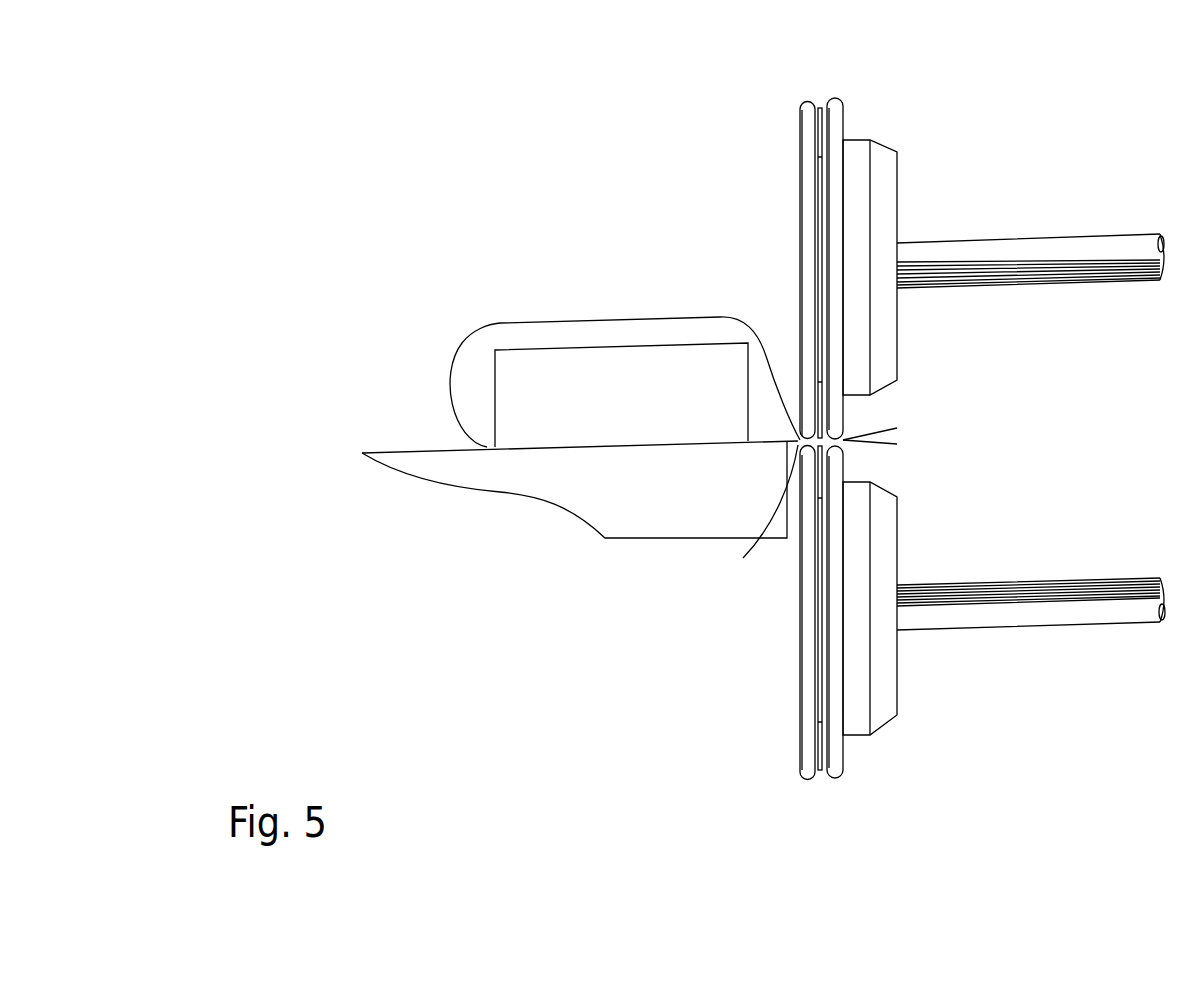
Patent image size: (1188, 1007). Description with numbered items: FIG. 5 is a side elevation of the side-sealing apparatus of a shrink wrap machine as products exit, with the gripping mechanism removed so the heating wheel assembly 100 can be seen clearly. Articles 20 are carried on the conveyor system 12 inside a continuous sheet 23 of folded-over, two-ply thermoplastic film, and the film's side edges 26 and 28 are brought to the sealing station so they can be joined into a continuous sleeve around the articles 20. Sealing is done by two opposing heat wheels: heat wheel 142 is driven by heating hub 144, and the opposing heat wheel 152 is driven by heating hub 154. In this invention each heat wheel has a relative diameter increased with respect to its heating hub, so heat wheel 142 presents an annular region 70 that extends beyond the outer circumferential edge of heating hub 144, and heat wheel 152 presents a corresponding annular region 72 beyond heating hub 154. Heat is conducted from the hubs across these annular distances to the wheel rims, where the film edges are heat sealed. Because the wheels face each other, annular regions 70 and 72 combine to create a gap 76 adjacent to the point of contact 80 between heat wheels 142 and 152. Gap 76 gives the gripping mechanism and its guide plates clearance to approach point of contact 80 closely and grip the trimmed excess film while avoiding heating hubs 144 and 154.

The heating wheel assembly 100 is at (766, 163).
The conveyor system 12 is at (566, 493).
The articles 20 is at (620, 345).
The continuous sheet of folded-over two-ply film 23 is at (495, 325).
The side edge 26 is at (770, 362).
The side edge 28 is at (754, 517).
The heat wheel 142 is at (833, 98).
The annular region 70 is at (845, 112).
The heating hub 144 is at (860, 139).
The gap 76 is at (865, 420).
The point of contact 80 is at (848, 452).
The heat wheel 152 is at (828, 780).
The annular region 72 is at (843, 762).
The heating hub 154 is at (897, 715).